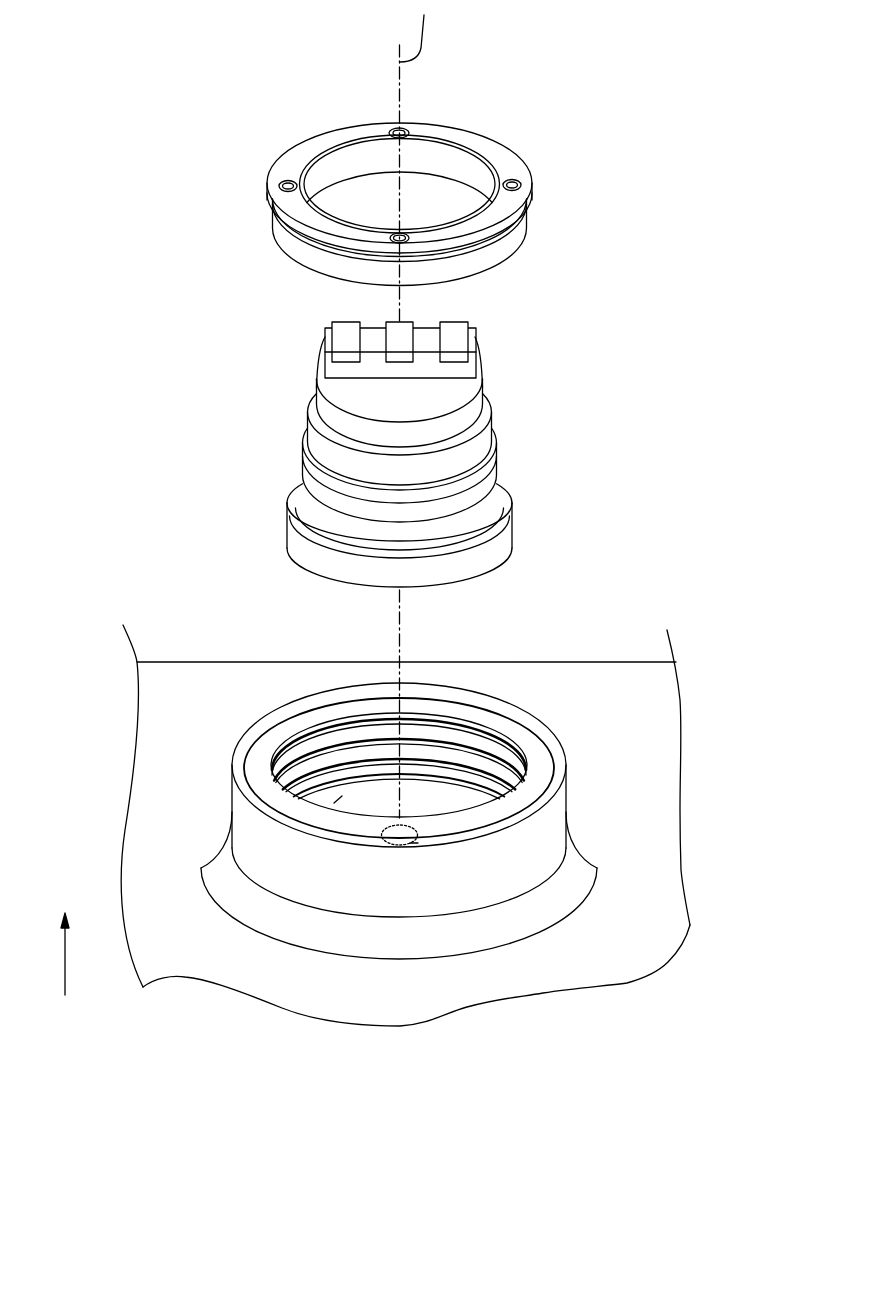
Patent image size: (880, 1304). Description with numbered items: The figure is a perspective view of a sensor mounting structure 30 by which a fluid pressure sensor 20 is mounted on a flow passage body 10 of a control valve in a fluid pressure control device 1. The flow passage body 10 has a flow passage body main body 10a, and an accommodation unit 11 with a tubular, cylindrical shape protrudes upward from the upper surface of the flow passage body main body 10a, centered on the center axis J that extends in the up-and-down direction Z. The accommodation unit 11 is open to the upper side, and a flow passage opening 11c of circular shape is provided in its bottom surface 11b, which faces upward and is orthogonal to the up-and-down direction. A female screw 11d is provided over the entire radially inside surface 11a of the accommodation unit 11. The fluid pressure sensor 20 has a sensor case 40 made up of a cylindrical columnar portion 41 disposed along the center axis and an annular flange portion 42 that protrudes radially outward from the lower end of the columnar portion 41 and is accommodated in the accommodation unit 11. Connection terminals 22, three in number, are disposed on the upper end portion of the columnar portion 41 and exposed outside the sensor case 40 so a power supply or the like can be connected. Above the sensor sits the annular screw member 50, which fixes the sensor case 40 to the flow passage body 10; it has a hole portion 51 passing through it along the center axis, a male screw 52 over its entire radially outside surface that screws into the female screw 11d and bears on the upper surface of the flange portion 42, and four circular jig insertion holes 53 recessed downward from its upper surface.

The fluid pressure control device 1 is at (580, 80).
The flow passage body 10 is at (212, 644).
The flow passage body main body 10a is at (638, 693).
The accommodation unit 11 is at (568, 804).
The radially inside surface 11a is at (378, 806).
The bottom surface 11b is at (351, 801).
The flow passage opening 11c is at (414, 843).
The female screw 11d is at (492, 735).
The fluid pressure sensor 20 is at (289, 374).
The connection terminals 22 is at (348, 333).
The sensor mounting structure 30 is at (191, 250).
The sensor case 40 is at (500, 390).
The columnar portion 41 is at (462, 420).
The flange portion 42 is at (512, 527).
The screw member 50 is at (530, 152).
The hole portion 51 is at (438, 152).
The male screw 52 is at (525, 237).
The jig insertion holes 53 is at (288, 181).